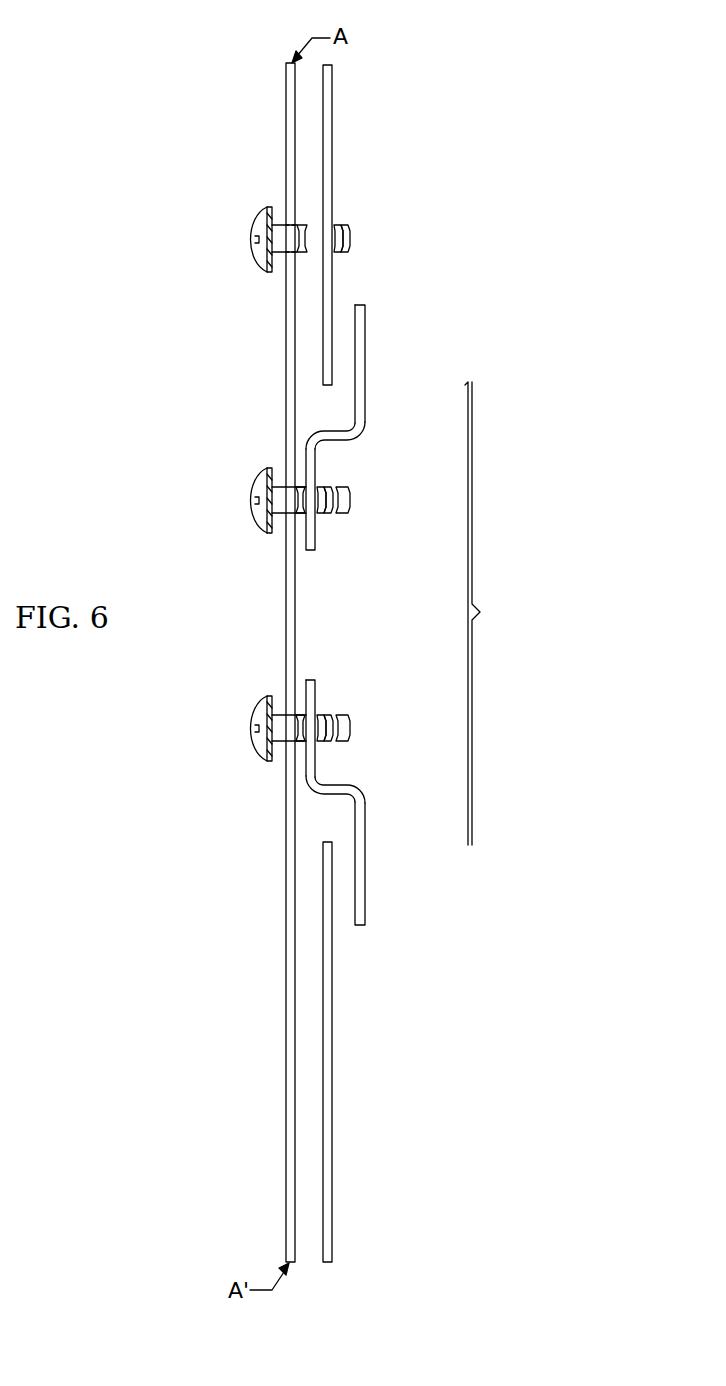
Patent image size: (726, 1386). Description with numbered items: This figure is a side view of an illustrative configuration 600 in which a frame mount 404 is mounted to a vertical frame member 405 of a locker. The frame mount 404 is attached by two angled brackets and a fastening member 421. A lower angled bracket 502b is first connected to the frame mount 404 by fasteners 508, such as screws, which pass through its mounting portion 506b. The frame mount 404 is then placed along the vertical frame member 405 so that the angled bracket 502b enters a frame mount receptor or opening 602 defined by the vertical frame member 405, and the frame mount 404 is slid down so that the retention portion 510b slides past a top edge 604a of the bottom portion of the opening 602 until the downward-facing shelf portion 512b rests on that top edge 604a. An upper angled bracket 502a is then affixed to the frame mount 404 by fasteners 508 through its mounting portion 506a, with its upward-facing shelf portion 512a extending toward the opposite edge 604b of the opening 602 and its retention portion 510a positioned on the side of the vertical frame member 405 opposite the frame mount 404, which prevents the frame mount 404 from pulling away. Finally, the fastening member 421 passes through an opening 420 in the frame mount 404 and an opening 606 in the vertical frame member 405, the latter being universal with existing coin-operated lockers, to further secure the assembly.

The frame mount 404 is at (286, 78).
The vertical frame member 405 is at (333, 108).
The opening 420 is at (291, 224).
The fastening member 421 is at (260, 209).
The opening 606 is at (341, 224).
The retention portion 510a is at (366, 312).
The angled bracket 502a is at (421, 425).
The edge of opening 604b is at (328, 392).
The shelf portion 512a is at (331, 446).
The fasteners 508 is at (259, 474).
The mounting portion 506a is at (318, 532).
The frame mount receptor or opening 602 is at (496, 613).
The mounting portion 506b is at (318, 701).
The shelf portion 512b is at (333, 778).
The top edge 604a is at (328, 838).
The angled bracket 502b is at (422, 803).
The retention portion 510b is at (366, 912).
The configuration of the frame mount being mounted to the vertical frame member 600 is at (575, 106).